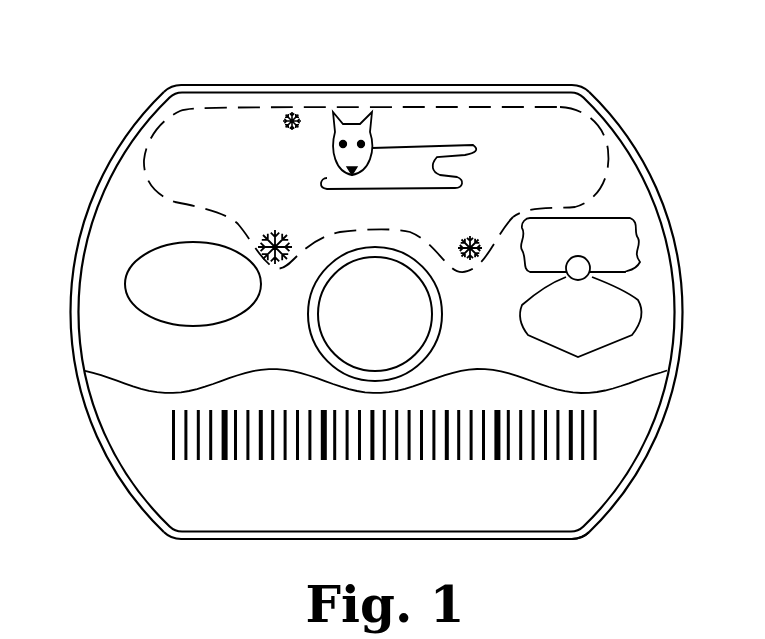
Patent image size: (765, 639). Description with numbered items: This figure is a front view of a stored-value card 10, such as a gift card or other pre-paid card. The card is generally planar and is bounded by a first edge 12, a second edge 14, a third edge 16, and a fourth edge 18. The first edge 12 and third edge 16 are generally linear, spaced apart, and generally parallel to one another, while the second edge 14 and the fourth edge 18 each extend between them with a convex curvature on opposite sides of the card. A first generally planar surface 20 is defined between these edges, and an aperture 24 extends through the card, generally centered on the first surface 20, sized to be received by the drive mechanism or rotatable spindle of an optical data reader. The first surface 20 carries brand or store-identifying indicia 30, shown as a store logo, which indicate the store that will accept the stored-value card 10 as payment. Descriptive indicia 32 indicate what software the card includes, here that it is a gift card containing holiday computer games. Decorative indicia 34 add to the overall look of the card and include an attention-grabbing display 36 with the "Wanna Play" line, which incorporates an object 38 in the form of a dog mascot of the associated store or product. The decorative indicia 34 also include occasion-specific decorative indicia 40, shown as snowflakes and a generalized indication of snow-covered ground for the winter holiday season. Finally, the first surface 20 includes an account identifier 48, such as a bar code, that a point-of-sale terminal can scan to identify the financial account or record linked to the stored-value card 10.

The stored-value card 10 is at (378, 303).
The first edge 12 is at (506, 86).
The second edge 14 is at (682, 264).
The third edge 16 is at (541, 541).
The fourth edge 18 is at (144, 510).
The first generally planar surface 20 is at (612, 432).
The aperture 24 is at (340, 347).
The brand or store-identifying indicia 30 is at (128, 286).
The descriptive indicia 32 is at (627, 265).
The decorative indicia 34 is at (600, 132).
The attention-grabbing display 36 is at (168, 146).
The object 38 is at (402, 152).
The occasion-specific decorative indicia 40 is at (296, 112).
The account identifier 48 is at (465, 452).